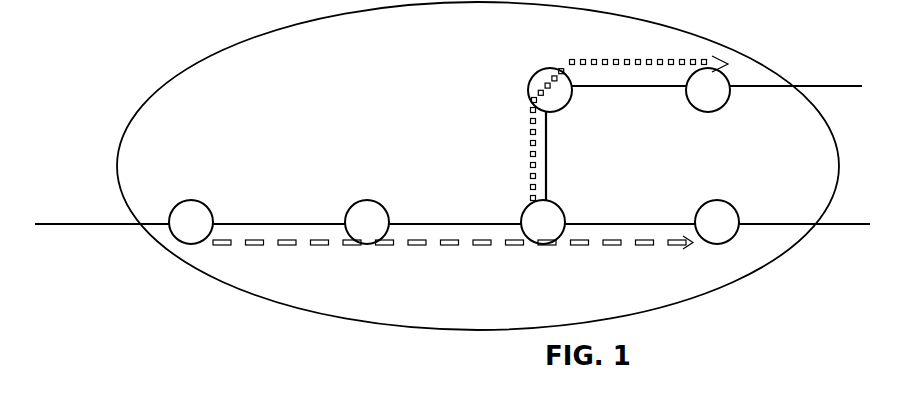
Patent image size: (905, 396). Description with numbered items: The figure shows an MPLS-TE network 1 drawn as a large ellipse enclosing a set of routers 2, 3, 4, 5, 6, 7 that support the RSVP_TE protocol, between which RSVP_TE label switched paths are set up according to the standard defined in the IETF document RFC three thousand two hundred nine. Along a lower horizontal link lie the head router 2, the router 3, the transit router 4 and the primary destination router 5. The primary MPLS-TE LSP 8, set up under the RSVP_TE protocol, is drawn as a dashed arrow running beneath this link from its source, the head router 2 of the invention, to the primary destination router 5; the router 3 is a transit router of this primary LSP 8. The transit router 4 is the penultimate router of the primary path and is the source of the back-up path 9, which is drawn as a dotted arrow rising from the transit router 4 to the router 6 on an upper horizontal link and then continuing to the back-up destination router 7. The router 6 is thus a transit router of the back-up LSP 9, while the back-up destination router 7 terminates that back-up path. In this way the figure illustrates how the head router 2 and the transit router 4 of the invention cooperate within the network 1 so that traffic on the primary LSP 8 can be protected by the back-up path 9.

The MPLS-TE network 1 is at (170, 80).
The head router 2 is at (191, 206).
The transit router of the primary LSP 3 is at (363, 205).
The transit router 4 is at (527, 211).
The primary destination router 5 is at (705, 212).
The transit router of the back-up LSP 6 is at (537, 76).
The back-up destination router 7 is at (725, 110).
The primary MPLS-TE LSP 8 is at (450, 246).
The back-up path 9 is at (592, 58).